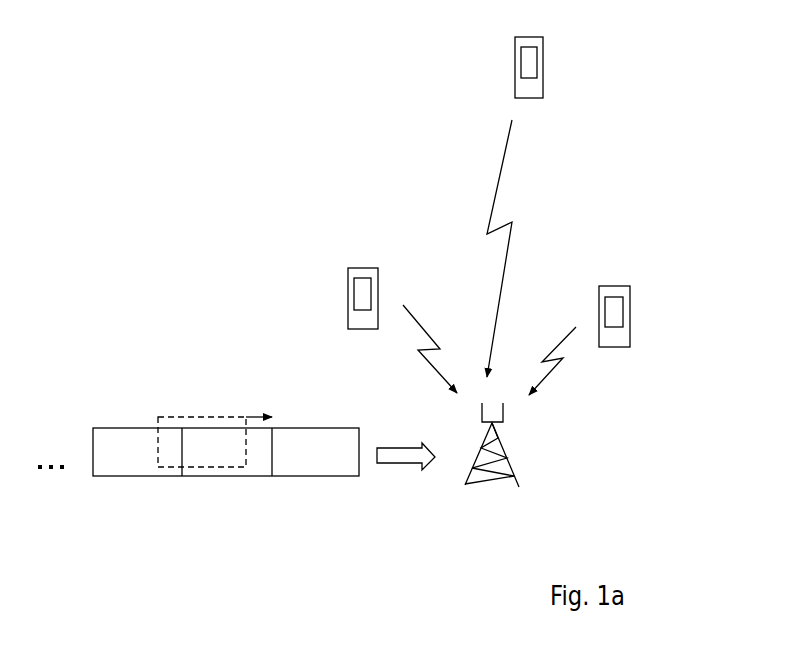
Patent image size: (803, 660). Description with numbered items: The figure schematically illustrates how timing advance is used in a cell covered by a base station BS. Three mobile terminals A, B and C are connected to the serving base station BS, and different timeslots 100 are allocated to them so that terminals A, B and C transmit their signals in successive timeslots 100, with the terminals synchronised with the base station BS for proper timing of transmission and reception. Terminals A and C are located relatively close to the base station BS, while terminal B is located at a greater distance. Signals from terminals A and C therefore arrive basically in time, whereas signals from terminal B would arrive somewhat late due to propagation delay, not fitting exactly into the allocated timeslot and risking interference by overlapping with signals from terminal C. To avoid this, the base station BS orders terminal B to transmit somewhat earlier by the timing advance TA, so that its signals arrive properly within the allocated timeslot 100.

The timeslots 100 is at (123, 380).
The timing advance TA is at (262, 403).
The base station BS is at (517, 465).
The mobile terminal A is at (579, 338).
The mobile terminal B is at (512, 203).
The mobile terminal C is at (385, 328).